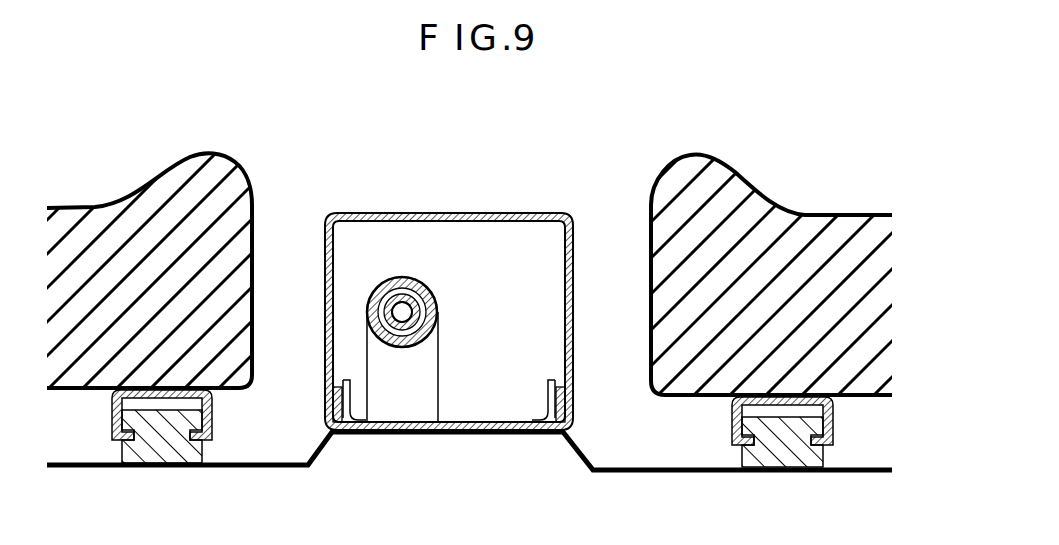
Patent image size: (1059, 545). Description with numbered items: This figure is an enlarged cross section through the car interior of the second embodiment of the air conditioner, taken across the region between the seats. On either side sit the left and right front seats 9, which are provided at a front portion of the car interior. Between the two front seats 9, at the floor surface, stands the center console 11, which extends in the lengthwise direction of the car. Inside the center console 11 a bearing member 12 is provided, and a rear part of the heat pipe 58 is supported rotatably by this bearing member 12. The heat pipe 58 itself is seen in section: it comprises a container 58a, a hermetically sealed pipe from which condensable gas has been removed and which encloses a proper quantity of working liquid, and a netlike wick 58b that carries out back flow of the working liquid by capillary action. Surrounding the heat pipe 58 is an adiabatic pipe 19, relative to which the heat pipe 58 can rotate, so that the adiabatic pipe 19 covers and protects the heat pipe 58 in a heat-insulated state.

The front seats 9 is at (125, 196).
The center console 11 is at (493, 213).
The bearing member 12 is at (440, 353).
The adiabatic pipe 19 is at (405, 283).
The heat pipe 58 is at (450, 317).
The container 58a is at (438, 312).
The wick 58b is at (402, 347).